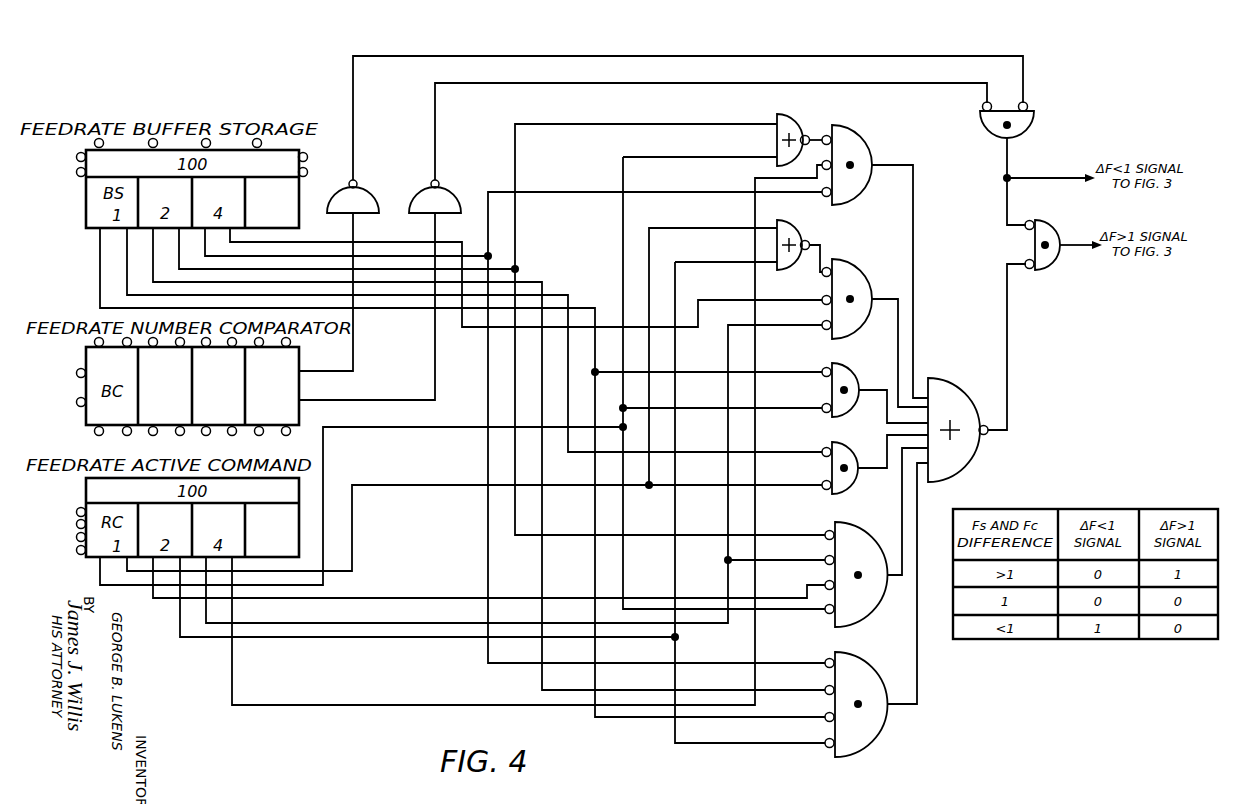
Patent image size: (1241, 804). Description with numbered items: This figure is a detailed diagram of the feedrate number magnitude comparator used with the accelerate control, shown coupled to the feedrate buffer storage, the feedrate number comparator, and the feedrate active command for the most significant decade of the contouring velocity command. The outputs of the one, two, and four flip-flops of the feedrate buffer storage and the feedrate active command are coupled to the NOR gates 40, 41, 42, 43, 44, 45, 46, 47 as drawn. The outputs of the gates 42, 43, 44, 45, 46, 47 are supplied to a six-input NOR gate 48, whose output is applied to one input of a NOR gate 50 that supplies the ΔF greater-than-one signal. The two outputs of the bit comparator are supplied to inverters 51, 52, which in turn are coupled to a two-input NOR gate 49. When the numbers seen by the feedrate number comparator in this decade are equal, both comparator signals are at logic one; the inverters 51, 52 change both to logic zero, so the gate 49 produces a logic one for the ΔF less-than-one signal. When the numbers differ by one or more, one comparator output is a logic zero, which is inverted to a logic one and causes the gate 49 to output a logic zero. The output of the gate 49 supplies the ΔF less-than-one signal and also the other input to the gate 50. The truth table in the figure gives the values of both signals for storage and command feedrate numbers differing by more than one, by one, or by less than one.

The NOR gate 40 is at (797, 119).
The NOR gate 41 is at (805, 234).
The NOR gate 42 is at (870, 142).
The NOR gate 43 is at (866, 278).
The NOR gate 44 is at (858, 374).
The NOR gate 45 is at (853, 448).
The NOR gate 46 is at (864, 528).
The NOR gate 47 is at (875, 663).
The six-input NOR gate 48 is at (953, 374).
The two-input NOR gate 49 is at (1040, 116).
The NOR gate 50 is at (1067, 234).
The inverter 51 is at (368, 188).
The inverter 52 is at (449, 188).